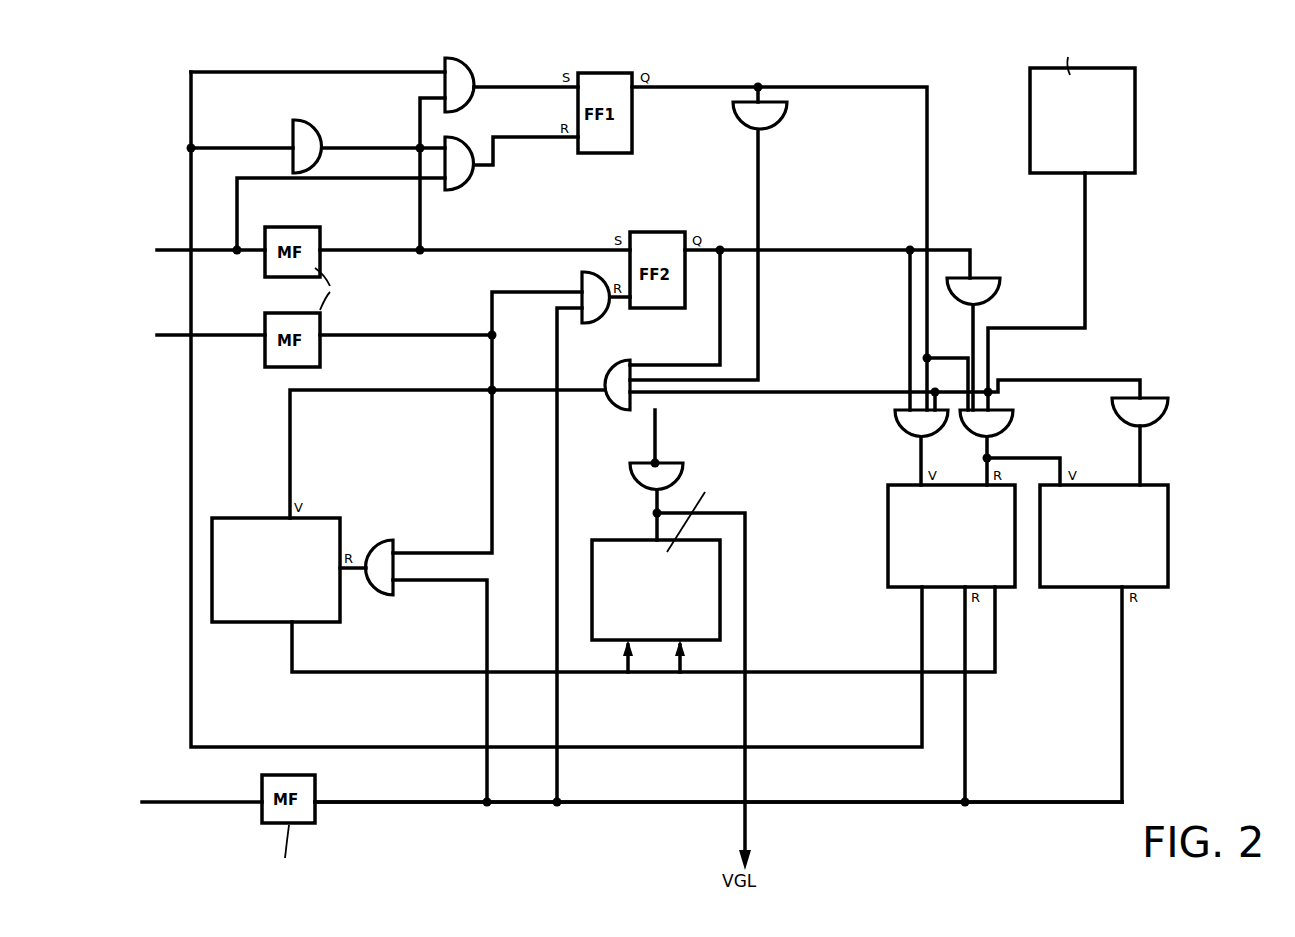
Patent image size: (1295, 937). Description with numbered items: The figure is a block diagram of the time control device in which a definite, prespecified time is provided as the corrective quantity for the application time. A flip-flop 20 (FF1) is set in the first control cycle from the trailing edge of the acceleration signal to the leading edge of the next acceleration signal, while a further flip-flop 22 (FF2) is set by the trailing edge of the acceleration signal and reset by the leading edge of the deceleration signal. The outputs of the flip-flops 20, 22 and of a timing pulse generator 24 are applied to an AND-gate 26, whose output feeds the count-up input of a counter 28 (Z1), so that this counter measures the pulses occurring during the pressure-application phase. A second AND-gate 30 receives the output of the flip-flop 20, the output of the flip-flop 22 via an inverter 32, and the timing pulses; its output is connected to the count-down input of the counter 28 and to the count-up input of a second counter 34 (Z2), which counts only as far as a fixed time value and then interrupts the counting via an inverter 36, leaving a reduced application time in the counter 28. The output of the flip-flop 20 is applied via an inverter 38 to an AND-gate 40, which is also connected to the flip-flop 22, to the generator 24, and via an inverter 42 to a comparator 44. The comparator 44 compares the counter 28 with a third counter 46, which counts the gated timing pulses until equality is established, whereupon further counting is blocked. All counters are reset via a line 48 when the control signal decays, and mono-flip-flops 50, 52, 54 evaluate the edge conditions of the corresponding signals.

The flip-flop 20 is at (632, 137).
The further flip-flop 22 is at (660, 298).
The timing pulse generator 24 is at (1045, 128).
The AND-gate 26 is at (910, 430).
The counter 28 is at (905, 570).
The second AND-gate 30 is at (1000, 420).
The inverter 32 is at (978, 285).
The second counter 34 is at (1095, 570).
The inverter 36 is at (1165, 417).
The inverter 38 is at (775, 117).
The AND-gate 40 is at (613, 390).
The inverter 42 is at (640, 480).
The comparator 44 is at (650, 628).
The third counter 46 is at (330, 600).
The line 48 is at (645, 805).
The mono-flip-flop 50 is at (295, 230).
The mono-flip-flop 52 is at (320, 345).
The mono-flip-flop 54 is at (315, 812).